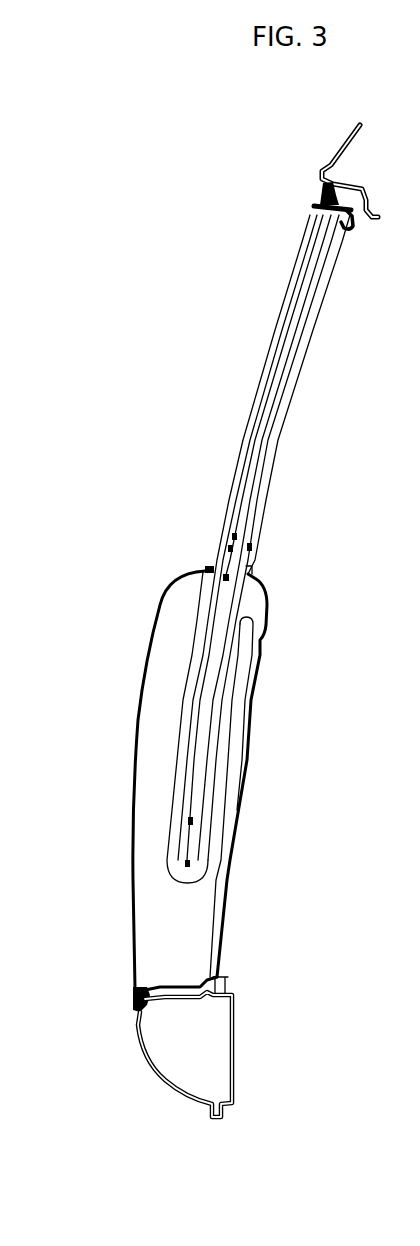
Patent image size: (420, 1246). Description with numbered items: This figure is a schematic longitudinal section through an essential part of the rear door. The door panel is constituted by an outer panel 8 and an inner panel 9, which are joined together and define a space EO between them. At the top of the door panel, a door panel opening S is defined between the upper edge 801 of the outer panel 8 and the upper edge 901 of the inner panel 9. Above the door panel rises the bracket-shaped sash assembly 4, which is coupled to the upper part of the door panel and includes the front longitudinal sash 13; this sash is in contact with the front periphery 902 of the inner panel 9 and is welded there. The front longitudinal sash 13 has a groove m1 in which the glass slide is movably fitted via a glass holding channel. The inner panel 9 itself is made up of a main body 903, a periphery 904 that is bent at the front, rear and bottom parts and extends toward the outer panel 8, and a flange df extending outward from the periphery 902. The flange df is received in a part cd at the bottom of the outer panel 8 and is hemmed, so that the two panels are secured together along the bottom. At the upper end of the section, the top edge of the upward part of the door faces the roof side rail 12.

The sash assembly 4 is at (270, 521).
The outer panel 8 is at (138, 752).
The inner panel 9 is at (244, 772).
The roof side rail 12 is at (329, 161).
The front longitudinal sash 13 is at (258, 470).
The groove m1 is at (276, 392).
The door panel opening S is at (233, 526).
The upper edge 801 is at (210, 566).
The upper edge 901 is at (248, 565).
The front periphery 902 is at (213, 787).
The main body 903 is at (230, 876).
The periphery 904 is at (183, 978).
The space EO is at (160, 916).
The flange df is at (137, 987).
The part at the bottom of the outer panel cd is at (140, 1013).